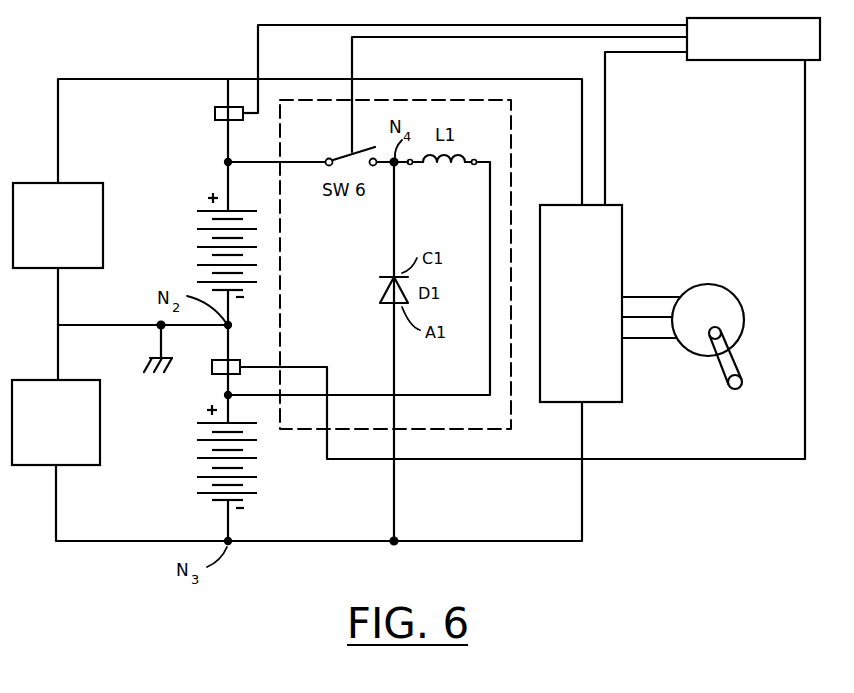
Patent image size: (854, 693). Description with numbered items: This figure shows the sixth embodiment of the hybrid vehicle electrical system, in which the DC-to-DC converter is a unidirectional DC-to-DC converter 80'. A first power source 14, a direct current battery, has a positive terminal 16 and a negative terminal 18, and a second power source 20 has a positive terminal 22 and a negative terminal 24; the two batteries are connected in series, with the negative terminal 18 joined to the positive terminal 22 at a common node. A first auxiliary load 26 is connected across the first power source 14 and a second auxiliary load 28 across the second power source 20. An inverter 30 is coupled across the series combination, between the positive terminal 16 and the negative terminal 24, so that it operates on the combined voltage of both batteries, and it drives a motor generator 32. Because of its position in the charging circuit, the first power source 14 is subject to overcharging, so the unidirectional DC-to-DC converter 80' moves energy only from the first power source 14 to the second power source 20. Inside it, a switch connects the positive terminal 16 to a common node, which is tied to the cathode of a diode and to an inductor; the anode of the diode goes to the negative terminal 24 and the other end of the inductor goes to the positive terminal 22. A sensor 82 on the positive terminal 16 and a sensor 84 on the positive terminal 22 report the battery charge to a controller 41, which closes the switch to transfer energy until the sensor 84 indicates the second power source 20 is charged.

The sensor 82 is at (216, 107).
The first auxiliary load 26 is at (97, 183).
The positive terminal 16 is at (226, 164).
The first power source 14 is at (200, 233).
The negative terminal 18 is at (231, 306).
The sensor 84 is at (212, 372).
The positive terminal 22 is at (222, 392).
The second power source 20 is at (202, 460).
The negative terminal 24 is at (224, 512).
The second auxiliary load 28 is at (77, 468).
The unidirectional DC-to-DC converter 80' is at (420, 264).
The inverter 30 is at (618, 202).
The controller 41 is at (755, 61).
The motor generator 32 is at (746, 322).